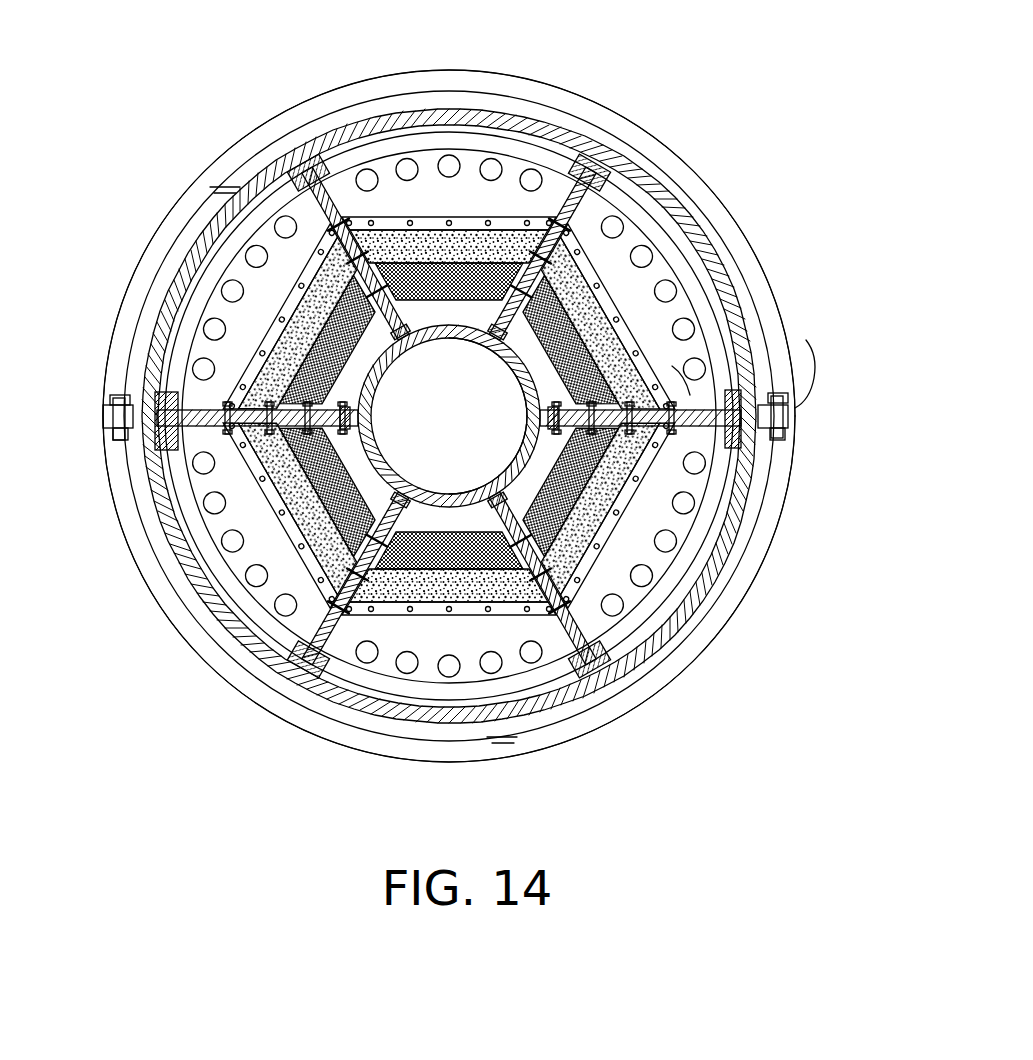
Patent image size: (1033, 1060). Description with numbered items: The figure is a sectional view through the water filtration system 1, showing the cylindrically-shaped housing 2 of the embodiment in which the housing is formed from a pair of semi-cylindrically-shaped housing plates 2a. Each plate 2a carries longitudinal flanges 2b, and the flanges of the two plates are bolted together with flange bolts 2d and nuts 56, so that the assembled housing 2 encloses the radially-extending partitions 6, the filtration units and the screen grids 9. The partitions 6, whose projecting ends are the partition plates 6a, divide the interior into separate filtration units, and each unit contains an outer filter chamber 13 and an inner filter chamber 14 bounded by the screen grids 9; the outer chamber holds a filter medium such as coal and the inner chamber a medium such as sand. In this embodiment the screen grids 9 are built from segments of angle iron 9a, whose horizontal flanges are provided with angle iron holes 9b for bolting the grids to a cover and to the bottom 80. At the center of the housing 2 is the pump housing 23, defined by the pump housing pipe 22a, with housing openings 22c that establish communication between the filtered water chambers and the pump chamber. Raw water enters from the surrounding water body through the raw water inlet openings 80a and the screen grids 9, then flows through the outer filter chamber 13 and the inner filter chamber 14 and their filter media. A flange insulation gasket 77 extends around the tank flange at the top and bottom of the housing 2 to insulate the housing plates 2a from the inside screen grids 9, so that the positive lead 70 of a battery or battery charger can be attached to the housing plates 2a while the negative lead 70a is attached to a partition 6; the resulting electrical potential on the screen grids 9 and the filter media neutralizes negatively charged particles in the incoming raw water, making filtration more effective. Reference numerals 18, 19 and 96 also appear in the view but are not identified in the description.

The water filtration system 1 is at (736, 122).
The housing 2 is at (580, 127).
The semi-cylindrically-shaped plates 2a is at (672, 262).
The longitudinal flanges 2b is at (103, 420).
The flange bolts 2d is at (113, 437).
The partitions 6 is at (560, 207).
The partition plates 6a is at (345, 190).
The screen grids 9 is at (250, 486).
The angle iron segments 9a is at (583, 185).
The angle iron holes 9b is at (348, 448).
The outer filter chamber 13 is at (598, 272).
The inner filter chamber 14 is at (418, 298).
The annular space 18 is at (432, 142).
The strut end block 19 is at (303, 158).
The pump housing pipe 22a is at (488, 492).
The housing openings 22c is at (528, 388).
The pump housing 23 is at (447, 340).
The nuts 56 is at (775, 396).
The positive lead 70 is at (814, 362).
The negative lead 70a is at (672, 366).
The flange insulation gasket 77 is at (717, 510).
The bottom 80 is at (172, 198).
The raw water inlet openings 80a is at (490, 180).
The refractory layer 96 is at (238, 543).